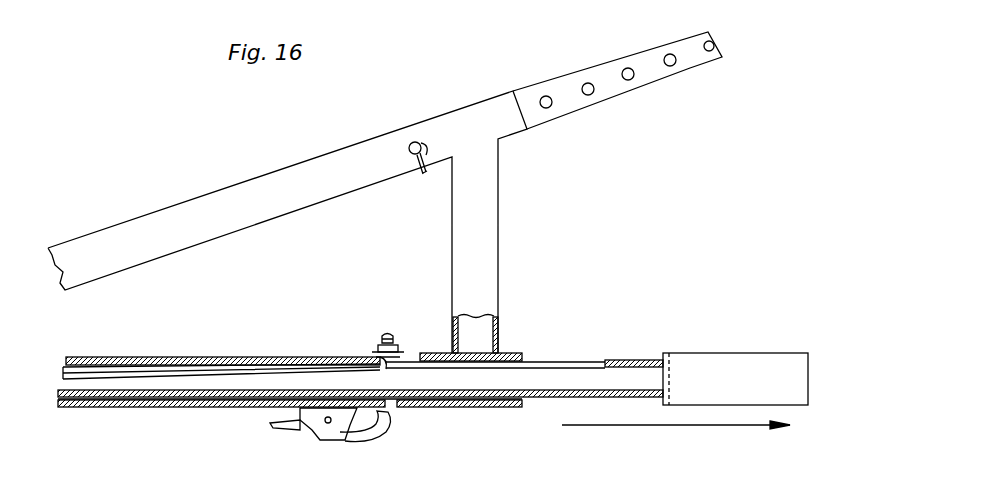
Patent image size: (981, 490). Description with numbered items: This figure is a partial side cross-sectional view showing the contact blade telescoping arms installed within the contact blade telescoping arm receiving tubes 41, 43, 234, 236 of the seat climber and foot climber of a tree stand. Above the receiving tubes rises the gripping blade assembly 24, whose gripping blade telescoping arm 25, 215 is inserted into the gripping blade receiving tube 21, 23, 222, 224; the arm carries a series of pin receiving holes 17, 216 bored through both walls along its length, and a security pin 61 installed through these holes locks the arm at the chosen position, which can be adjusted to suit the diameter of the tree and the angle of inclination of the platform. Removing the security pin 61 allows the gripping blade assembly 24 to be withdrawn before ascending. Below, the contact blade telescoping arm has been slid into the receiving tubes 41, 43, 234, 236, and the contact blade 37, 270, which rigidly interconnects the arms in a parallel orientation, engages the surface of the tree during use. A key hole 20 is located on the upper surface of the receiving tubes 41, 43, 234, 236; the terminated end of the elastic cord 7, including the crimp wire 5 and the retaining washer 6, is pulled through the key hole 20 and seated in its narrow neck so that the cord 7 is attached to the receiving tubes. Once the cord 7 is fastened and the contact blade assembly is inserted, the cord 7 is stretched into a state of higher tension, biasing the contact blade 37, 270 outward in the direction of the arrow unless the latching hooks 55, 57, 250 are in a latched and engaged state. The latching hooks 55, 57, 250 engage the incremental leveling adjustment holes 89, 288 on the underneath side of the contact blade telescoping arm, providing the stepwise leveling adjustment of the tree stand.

The gripping blade receiving tube 21 is at (287, 222).
The gripping blade receiving tube 23 is at (287, 222).
The gripping blade receiving tube 222 is at (287, 222).
The gripping blade receiving tube 224 is at (172, 207).
The gripping blade telescoping arm 25 is at (617, 75).
The gripping blade telescoping arm 215 is at (613, 60).
The pin receiving hole 17 is at (608, 108).
The pin receiving hole 216 is at (668, 67).
The security pin 61 is at (410, 165).
The crimp wire 5 is at (366, 322).
The elastic cord 7 is at (366, 322).
The retaining washer 6 is at (388, 333).
The key hole 20 is at (408, 357).
The contact blade telescoping arm receiving tube 41 is at (360, 412).
The contact blade telescoping arm receiving tube 43 is at (360, 412).
The contact blade telescoping arm receiving tube 234 is at (360, 412).
The contact blade telescoping arm receiving tube 236 is at (140, 405).
The gripping blade assembly 24 is at (665, 352).
The contact blade 37 is at (735, 352).
The contact blade 270 is at (732, 352).
The incremental leveling adjustment hole 89 is at (566, 418).
The incremental leveling adjustment hole 288 is at (565, 393).
The latching hook 55 is at (391, 440).
The latching hook 57 is at (391, 440).
The latching hook 250 is at (378, 448).